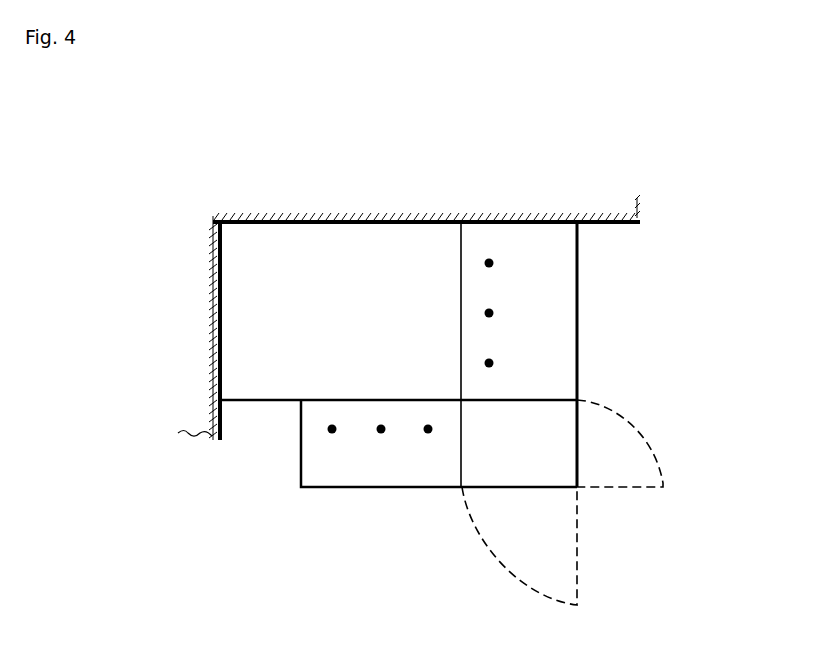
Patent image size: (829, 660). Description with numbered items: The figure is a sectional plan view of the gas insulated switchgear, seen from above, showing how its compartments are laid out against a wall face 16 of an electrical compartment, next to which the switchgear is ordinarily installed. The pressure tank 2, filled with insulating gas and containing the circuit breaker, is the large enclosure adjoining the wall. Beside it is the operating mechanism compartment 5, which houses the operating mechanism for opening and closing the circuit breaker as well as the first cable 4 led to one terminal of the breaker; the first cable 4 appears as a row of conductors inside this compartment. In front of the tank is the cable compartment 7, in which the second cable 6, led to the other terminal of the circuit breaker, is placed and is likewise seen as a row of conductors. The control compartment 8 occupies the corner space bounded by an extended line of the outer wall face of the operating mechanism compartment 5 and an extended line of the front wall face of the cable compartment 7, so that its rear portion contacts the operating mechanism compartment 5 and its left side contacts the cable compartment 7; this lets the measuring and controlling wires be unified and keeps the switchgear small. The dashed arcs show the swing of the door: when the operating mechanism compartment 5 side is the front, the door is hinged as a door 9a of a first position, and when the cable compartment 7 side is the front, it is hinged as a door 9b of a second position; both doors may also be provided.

The pressure tank 2 is at (252, 358).
The wall face of an electrical compartment 16 is at (637, 224).
The first cable 4 is at (492, 262).
The operating mechanism compartment 5 is at (543, 295).
The second cable 6 is at (330, 431).
The cable compartment 7 is at (353, 458).
The control compartment 8 is at (490, 460).
The door of a first position 9a is at (658, 455).
The door of a second position 9b is at (566, 592).